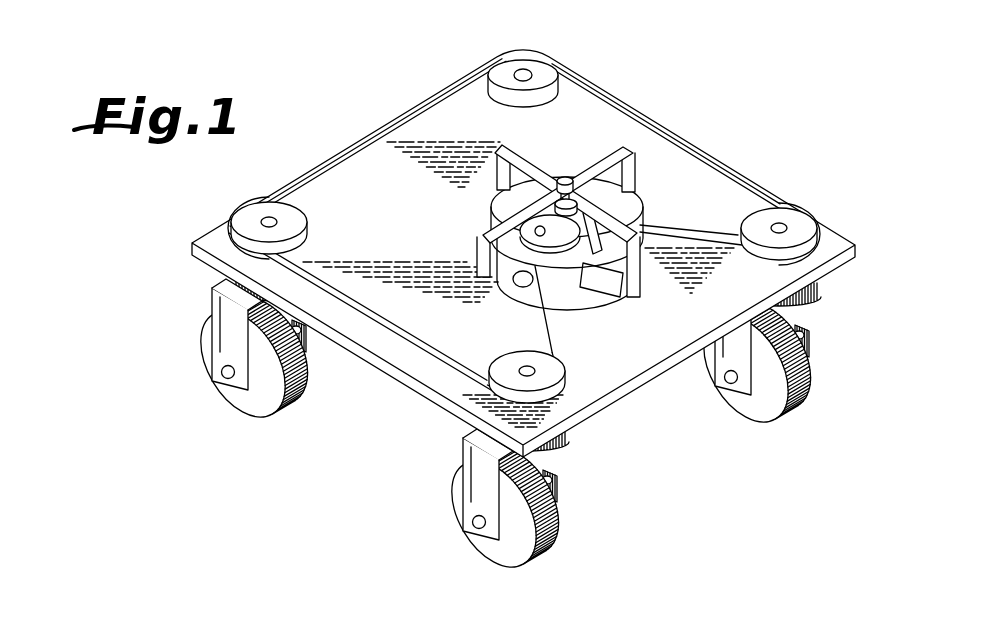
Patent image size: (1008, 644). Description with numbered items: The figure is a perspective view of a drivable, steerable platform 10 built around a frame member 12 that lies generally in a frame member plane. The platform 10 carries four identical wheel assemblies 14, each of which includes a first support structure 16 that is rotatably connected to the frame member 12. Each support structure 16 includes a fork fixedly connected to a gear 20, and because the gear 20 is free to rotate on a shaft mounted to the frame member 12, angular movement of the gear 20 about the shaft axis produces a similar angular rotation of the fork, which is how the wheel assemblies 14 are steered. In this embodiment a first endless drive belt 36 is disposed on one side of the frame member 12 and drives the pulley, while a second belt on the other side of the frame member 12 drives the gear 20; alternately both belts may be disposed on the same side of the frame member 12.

The drivable, steerable platform 10 is at (730, 114).
The frame member 12 is at (840, 231).
The wheel assembly 14 is at (303, 390).
The first support structure 16 is at (213, 305).
The gear 20 is at (228, 281).
The first endless drive belt 36 is at (565, 345).